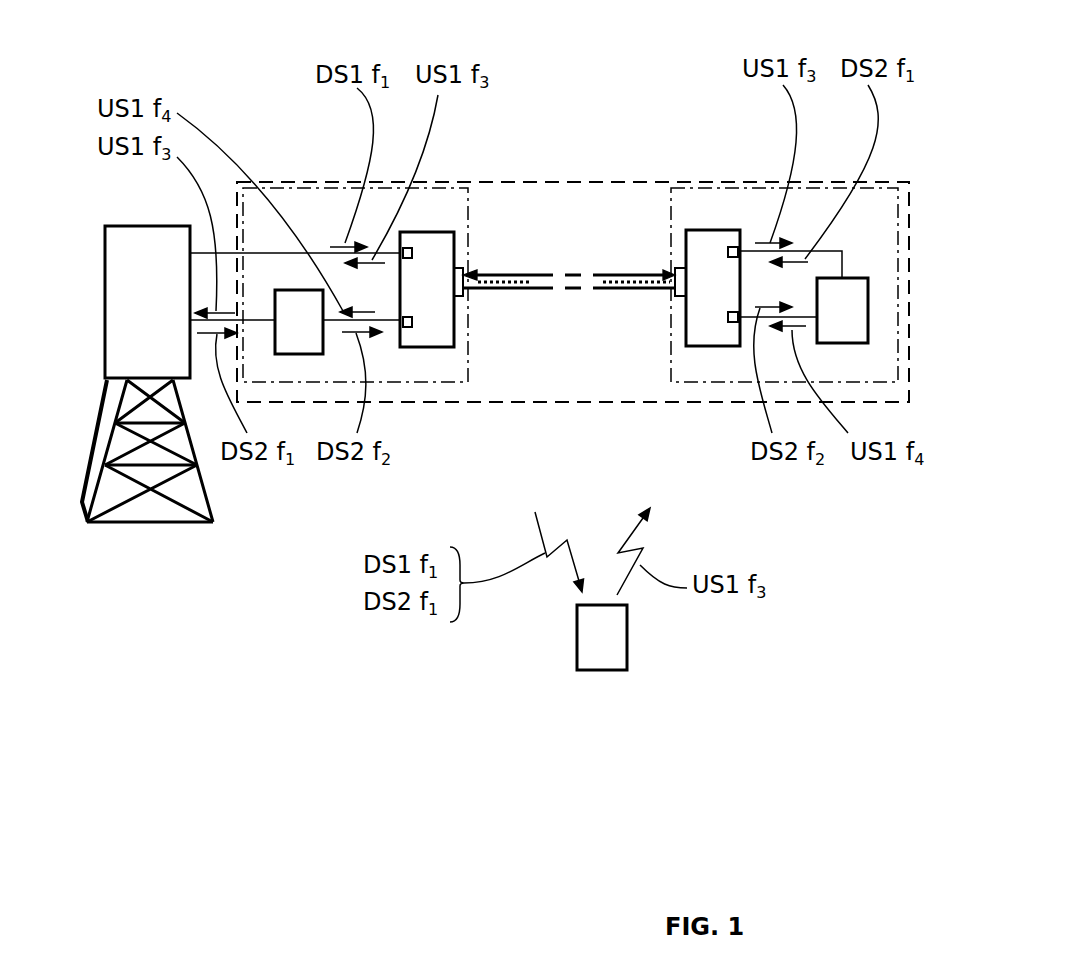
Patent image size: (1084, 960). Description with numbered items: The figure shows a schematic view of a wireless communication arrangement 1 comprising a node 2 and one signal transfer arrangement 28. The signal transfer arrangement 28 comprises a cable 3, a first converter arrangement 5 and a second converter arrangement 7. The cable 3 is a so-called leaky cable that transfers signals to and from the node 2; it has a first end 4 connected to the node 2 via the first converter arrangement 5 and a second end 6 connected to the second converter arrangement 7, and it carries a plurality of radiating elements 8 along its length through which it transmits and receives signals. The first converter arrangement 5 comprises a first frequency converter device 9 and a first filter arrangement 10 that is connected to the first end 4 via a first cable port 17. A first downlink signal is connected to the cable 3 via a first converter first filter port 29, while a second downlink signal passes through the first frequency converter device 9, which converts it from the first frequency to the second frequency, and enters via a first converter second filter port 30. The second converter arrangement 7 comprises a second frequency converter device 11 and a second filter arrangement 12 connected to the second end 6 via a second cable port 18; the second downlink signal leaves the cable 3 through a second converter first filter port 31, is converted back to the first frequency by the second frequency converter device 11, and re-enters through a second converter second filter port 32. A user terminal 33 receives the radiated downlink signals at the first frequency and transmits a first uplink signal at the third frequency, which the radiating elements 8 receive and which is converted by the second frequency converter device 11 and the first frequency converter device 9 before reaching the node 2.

The wireless communication arrangement 1 is at (650, 54).
The node 2 is at (141, 313).
The cable 3 is at (540, 284).
The first end 4 is at (472, 273).
The first converter arrangement 5 is at (318, 181).
The second end 6 is at (668, 276).
The second converter arrangement 7 is at (758, 182).
The radiating elements 8 is at (497, 290).
The first frequency converter device 9 is at (291, 320).
The first filter arrangement 10 is at (413, 290).
The second frequency converter device 11 is at (829, 308).
The second filter arrangement 12 is at (699, 290).
The first cable port 17 is at (460, 285).
The second cable port 18 is at (680, 296).
The signal transfer arrangement 28 is at (630, 402).
The first converter first filter port 29 is at (412, 248).
The first converter second filter port 30 is at (408, 327).
The second converter first filter port 31 is at (733, 322).
The second converter second filter port 32 is at (733, 247).
The user terminal 33 is at (588, 635).